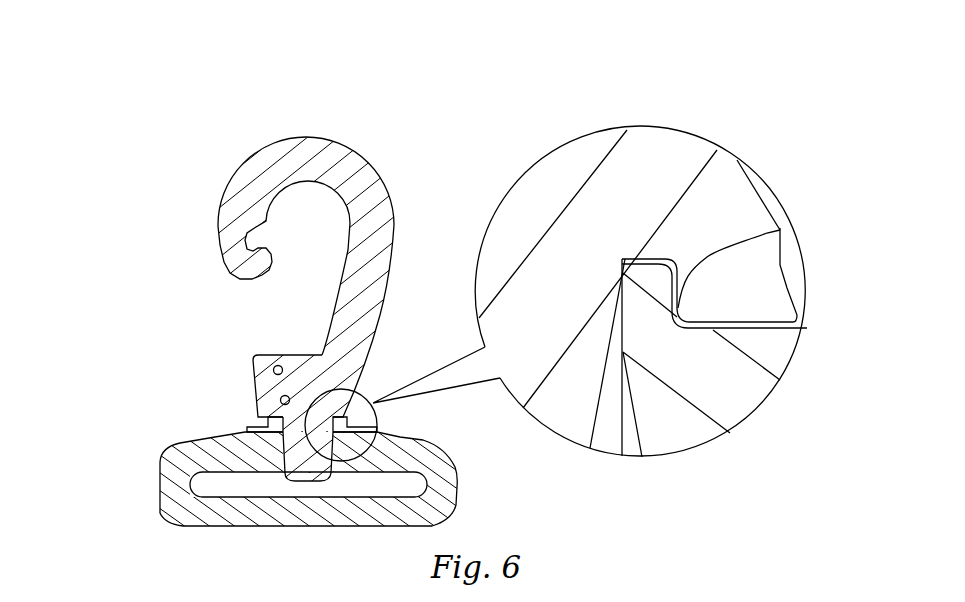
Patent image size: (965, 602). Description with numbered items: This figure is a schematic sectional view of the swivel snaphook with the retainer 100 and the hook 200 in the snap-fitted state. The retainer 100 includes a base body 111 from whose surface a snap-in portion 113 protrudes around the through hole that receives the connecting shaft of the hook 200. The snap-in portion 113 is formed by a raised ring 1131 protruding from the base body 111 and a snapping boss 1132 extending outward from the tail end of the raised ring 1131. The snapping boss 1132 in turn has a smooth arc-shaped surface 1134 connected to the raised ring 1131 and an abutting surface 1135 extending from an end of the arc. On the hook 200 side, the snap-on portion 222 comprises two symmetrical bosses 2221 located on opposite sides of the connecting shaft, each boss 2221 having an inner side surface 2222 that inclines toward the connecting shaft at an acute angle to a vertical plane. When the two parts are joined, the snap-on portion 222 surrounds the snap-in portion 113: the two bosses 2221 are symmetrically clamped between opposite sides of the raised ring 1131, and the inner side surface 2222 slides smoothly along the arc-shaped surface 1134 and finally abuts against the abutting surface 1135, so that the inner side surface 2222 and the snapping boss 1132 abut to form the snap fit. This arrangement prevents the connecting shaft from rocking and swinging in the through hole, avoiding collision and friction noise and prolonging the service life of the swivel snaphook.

The retainer 100 is at (163, 486).
The base body 111 is at (713, 390).
The snap-in portion 113 is at (258, 415).
The raised ring 1131 is at (638, 298).
The snapping boss 1132 is at (580, 60).
The arc-shaped surface 1134 is at (617, 259).
The abutting surface 1135 is at (665, 259).
The hook 200 is at (222, 227).
The snap-on portion 222 is at (258, 425).
The boss 2221 is at (777, 292).
The inner side surface 2222 is at (780, 228).